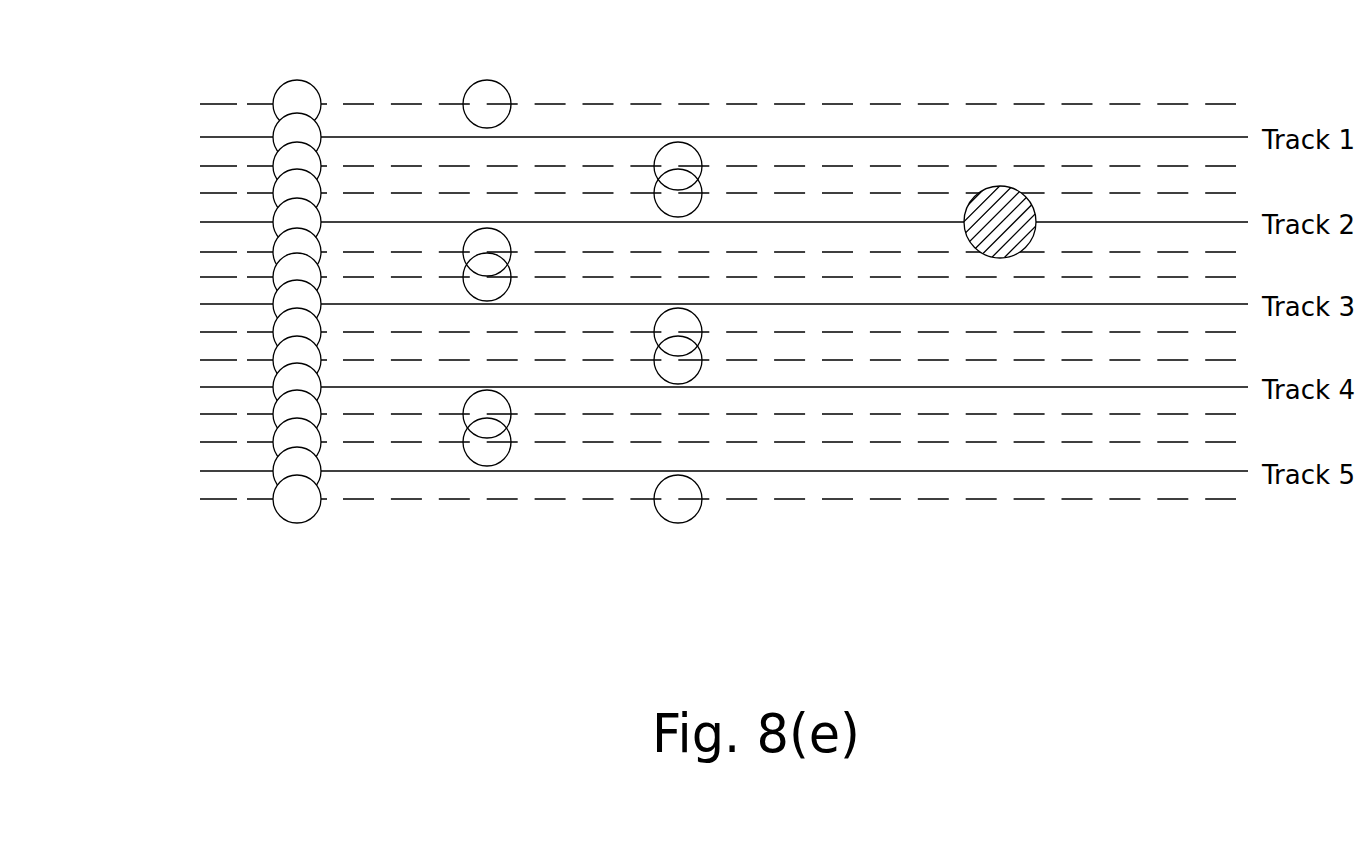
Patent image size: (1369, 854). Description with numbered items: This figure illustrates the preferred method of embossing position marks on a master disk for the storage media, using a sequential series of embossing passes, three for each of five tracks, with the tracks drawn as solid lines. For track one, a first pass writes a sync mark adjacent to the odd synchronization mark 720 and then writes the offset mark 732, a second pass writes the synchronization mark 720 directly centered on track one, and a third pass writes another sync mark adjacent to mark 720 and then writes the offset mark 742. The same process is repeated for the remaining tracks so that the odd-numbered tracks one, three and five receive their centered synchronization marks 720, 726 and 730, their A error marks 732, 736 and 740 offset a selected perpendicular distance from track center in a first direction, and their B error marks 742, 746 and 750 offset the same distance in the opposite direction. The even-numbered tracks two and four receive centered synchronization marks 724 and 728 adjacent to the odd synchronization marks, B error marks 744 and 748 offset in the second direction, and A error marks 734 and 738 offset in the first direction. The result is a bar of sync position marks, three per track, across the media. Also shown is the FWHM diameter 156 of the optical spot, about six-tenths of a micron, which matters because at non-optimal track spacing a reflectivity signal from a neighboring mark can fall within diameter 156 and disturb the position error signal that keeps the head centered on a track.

The odd synchronization mark 720 is at (320, 125).
The even synchronization mark 724 is at (320, 215).
The odd synchronization mark 726 is at (320, 296).
The even synchronization mark 728 is at (320, 377).
The odd synchronization mark 730 is at (313, 458).
The odd A error mark 732 is at (512, 93).
The even A error mark 734 is at (653, 193).
The odd A error mark 736 is at (512, 280).
The even A error mark 738 is at (652, 358).
The odd A error mark 740 is at (512, 437).
The odd B error mark 742 is at (700, 157).
The even B error mark 744 is at (463, 250).
The odd B error mark 746 is at (698, 325).
The even B error mark 748 is at (462, 415).
The odd B error mark 750 is at (698, 503).
The FWHM diameter 156 is at (1000, 187).